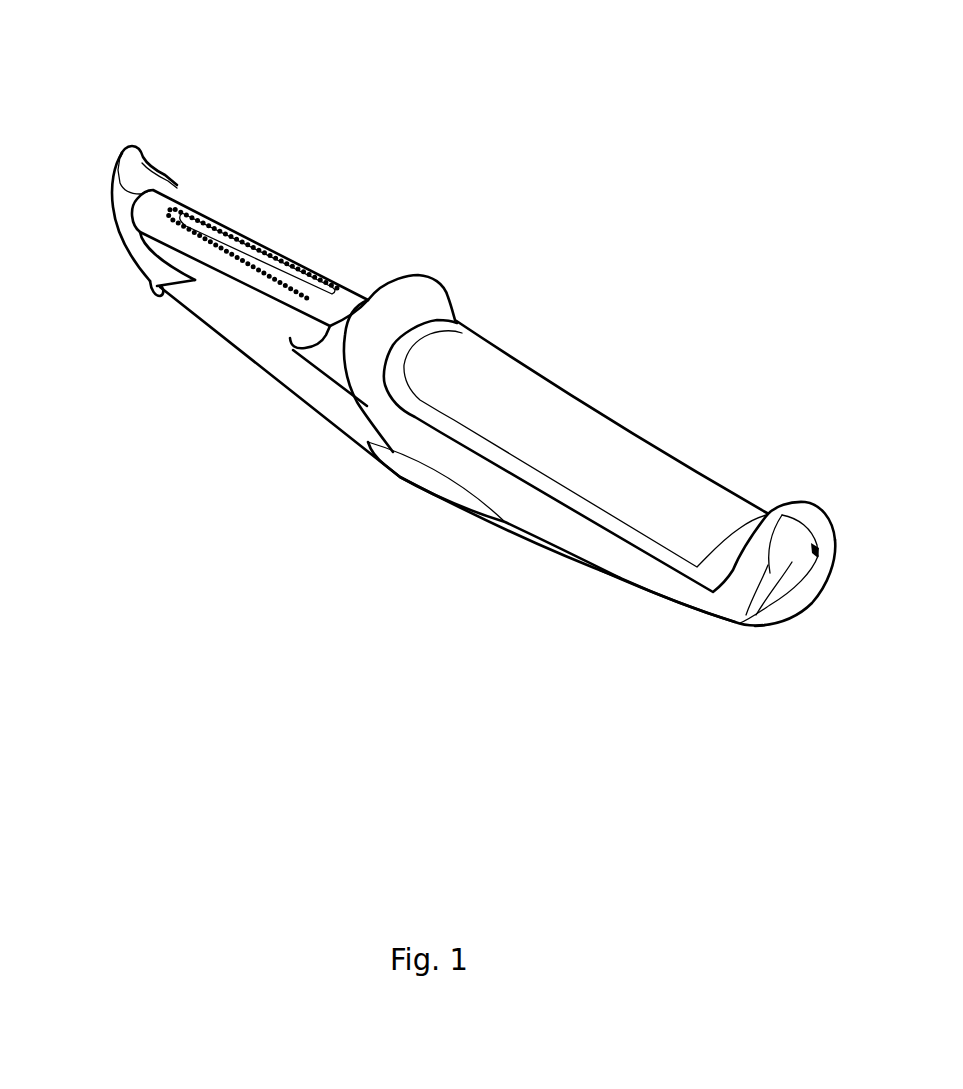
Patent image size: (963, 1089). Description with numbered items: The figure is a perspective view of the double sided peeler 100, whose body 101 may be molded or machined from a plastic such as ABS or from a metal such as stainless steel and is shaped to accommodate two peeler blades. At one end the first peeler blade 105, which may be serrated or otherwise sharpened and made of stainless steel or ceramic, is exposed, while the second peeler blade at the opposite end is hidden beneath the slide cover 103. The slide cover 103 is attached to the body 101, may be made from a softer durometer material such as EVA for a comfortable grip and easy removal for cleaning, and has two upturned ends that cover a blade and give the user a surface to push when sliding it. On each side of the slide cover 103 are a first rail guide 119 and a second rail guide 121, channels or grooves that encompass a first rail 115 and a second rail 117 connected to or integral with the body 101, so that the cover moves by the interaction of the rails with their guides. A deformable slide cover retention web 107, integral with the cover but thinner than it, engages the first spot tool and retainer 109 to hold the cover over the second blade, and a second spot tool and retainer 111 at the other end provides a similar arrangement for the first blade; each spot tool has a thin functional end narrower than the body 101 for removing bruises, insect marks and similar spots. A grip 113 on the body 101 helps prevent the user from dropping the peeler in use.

The double sided peeler 100 is at (125, 92).
The body 101 is at (340, 418).
The slide cover 103 is at (663, 468).
The first peeler blade 105 is at (183, 193).
The slide cover retention web 107 is at (800, 530).
The first spot tool and retainer 109 is at (807, 557).
The second spot tool and retainer 111 is at (120, 155).
The grip 113 is at (445, 487).
The first rail 115 is at (305, 368).
The second rail 117 is at (263, 258).
The first rail guide 119 is at (678, 597).
The second rail guide 121 is at (823, 553).